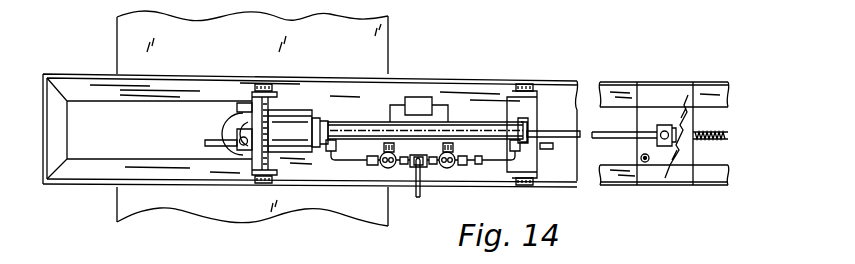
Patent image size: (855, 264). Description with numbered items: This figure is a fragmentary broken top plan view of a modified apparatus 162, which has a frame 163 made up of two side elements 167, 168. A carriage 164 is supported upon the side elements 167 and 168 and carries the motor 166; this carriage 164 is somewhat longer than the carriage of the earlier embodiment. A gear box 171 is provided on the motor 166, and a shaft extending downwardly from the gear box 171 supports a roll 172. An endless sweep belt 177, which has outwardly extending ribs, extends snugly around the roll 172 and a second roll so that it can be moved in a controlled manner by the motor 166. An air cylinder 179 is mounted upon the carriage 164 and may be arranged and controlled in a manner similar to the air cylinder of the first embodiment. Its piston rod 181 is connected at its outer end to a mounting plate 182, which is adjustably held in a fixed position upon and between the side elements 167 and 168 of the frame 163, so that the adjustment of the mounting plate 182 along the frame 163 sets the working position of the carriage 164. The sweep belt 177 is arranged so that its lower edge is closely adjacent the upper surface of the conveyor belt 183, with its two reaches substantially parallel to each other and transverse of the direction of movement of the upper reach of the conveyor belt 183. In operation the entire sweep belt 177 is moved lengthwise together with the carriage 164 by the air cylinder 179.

The modified apparatus 162 is at (480, 44).
The frame 163 is at (153, 77).
The carriage 164 is at (326, 95).
The motor 166 is at (292, 113).
The side element 167 is at (80, 75).
The side element 168 is at (88, 186).
The gear box 171 is at (218, 137).
The roll 172 is at (232, 152).
The endless sweep belt 177 is at (222, 127).
The air cylinder 179 is at (483, 128).
The piston rod 181 is at (612, 135).
The mounting plate 182 is at (657, 94).
The conveyor belt 183 is at (152, 205).